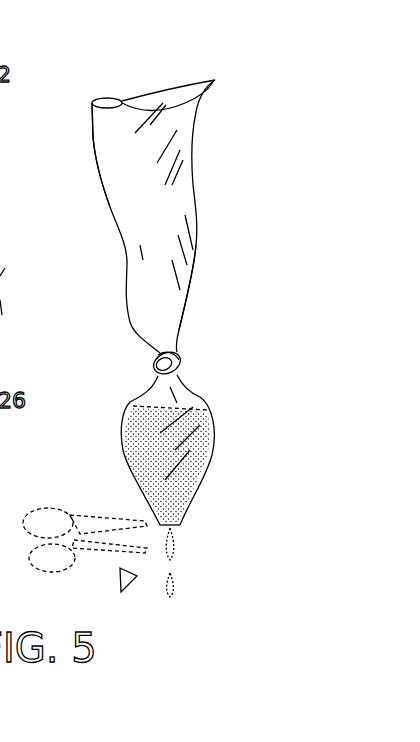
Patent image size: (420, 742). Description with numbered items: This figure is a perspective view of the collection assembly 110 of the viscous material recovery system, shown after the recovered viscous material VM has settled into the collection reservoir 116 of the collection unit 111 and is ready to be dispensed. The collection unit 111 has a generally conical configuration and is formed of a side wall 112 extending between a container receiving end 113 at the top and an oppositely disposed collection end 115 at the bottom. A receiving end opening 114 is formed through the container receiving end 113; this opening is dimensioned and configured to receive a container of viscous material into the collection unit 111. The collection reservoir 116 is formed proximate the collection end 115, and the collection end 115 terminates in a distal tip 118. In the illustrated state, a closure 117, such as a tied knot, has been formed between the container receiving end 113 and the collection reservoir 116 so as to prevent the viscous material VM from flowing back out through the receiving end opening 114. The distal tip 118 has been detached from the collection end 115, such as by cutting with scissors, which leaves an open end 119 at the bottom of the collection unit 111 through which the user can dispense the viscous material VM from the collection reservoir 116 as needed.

The collection assembly 110 is at (208, 125).
The collection unit 111 is at (195, 263).
The side wall 112 is at (148, 190).
The container receiving end 113 is at (90, 125).
The receiving end opening 114 is at (105, 102).
The collection end 115 is at (190, 500).
The collection reservoir 116 is at (195, 395).
The closure 117 is at (180, 354).
The distal tip 118 is at (121, 592).
The cut tip 119 is at (173, 530).
The viscous material VM is at (183, 440).